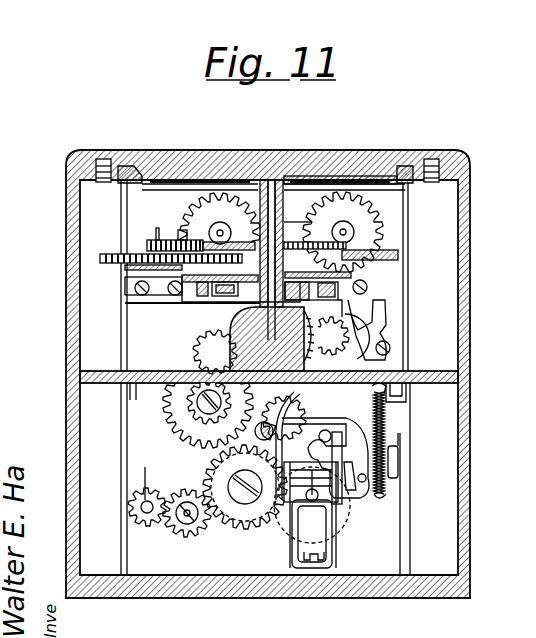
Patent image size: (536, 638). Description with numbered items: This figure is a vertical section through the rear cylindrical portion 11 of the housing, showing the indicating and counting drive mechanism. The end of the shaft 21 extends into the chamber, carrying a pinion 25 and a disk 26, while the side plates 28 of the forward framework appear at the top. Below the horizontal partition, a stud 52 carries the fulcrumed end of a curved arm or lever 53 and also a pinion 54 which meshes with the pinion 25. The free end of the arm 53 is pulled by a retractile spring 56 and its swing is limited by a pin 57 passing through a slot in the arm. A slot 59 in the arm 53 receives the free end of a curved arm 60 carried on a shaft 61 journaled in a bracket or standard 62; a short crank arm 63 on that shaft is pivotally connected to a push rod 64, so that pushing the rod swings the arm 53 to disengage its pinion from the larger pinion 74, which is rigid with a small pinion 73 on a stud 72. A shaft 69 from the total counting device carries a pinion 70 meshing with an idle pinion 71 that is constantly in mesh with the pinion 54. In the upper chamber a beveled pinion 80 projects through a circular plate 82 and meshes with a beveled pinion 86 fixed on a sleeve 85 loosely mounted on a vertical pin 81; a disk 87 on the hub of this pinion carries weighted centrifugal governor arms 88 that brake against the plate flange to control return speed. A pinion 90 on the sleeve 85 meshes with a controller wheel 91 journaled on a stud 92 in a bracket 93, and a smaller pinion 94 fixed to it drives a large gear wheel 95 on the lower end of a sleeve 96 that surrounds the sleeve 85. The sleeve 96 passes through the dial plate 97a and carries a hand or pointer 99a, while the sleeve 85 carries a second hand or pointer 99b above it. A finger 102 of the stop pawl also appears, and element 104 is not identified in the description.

The cylindrical portion of housing 11 is at (74, 246).
The shaft 21 is at (312, 534).
The pinion 25 is at (336, 530).
The disk 26 is at (300, 436).
The side plates 28 is at (128, 310).
The stud 52 is at (188, 527).
The curved arm or lever 53 is at (368, 444).
The pinion 54 is at (230, 480).
The retractile spring 56 is at (388, 418).
The pin 57 is at (366, 479).
The slot 59 is at (332, 450).
The curved arm 60 is at (386, 428).
The shaft 61 is at (327, 488).
The bracket or standard 62 is at (338, 521).
The crank arm 63 is at (282, 430).
The push rod 64 is at (296, 404).
The shaft 69 is at (126, 474).
The pinion 70 is at (145, 527).
The idle pinion 71 is at (187, 530).
The stud 72 is at (194, 404).
The small pinion 73 is at (130, 398).
The larger pinion 74 is at (192, 424).
The beveled pinion 80 is at (226, 340).
The vertically disposed pin 81 is at (250, 222).
The circular plate 82 is at (190, 303).
The sleeve or tubular shaft 85 is at (346, 234).
The beveled pinion 86 is at (244, 330).
The disk 87 is at (368, 272).
The weighted centrifugal governor arms 88 is at (186, 300).
The pinion 90 is at (380, 248).
The controller wheel 91 is at (102, 262).
The stud 92 is at (143, 207).
The bracket 93 is at (142, 282).
The smaller pinion 94 is at (150, 245).
The gear wheel 95 is at (200, 226).
The sleeve 96 is at (298, 213).
The dial plate 97a is at (368, 182).
The hand or pointer 99a is at (186, 186).
The hand or pointer 99b is at (320, 184).
The finger 102 is at (386, 300).
The gear 104 is at (339, 336).